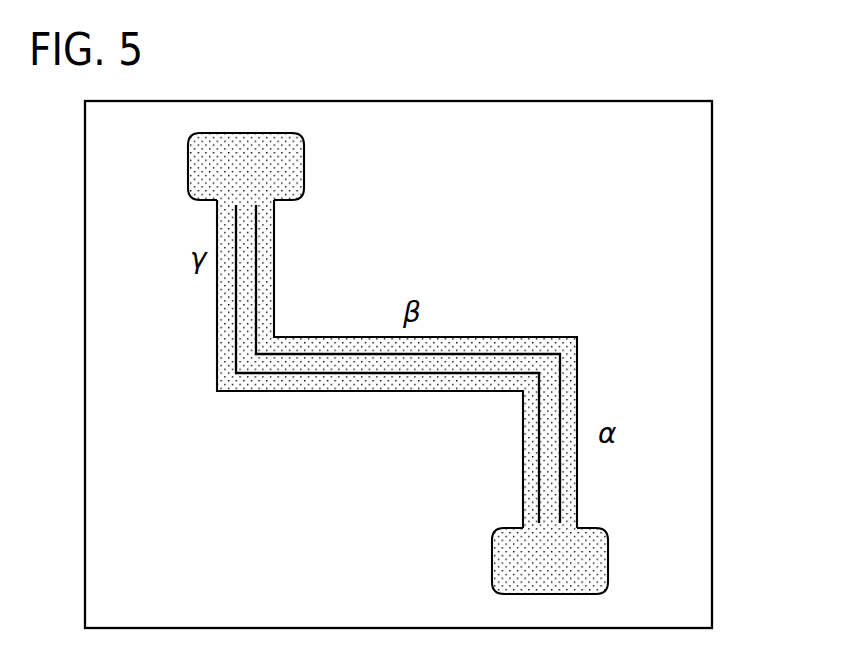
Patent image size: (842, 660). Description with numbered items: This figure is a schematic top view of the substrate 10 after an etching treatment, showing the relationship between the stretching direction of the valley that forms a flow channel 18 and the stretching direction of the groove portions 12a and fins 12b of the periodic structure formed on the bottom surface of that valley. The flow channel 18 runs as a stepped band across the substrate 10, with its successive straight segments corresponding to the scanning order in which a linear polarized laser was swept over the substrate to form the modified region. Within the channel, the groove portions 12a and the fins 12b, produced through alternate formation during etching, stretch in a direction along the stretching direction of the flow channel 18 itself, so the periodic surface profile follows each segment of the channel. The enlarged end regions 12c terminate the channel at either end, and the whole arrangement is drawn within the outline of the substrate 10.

The substrate 10 is at (678, 177).
The groove portions 12a is at (304, 362).
The fins 12b is at (407, 354).
The pad portion 12c is at (280, 164).
The flow channel 18 is at (503, 337).